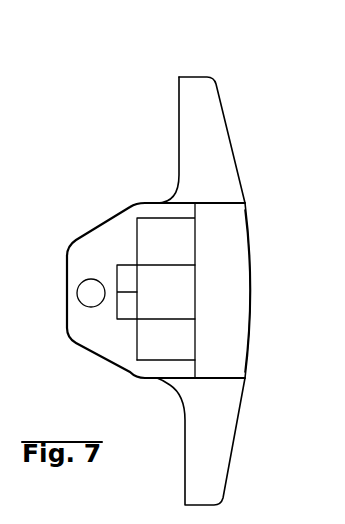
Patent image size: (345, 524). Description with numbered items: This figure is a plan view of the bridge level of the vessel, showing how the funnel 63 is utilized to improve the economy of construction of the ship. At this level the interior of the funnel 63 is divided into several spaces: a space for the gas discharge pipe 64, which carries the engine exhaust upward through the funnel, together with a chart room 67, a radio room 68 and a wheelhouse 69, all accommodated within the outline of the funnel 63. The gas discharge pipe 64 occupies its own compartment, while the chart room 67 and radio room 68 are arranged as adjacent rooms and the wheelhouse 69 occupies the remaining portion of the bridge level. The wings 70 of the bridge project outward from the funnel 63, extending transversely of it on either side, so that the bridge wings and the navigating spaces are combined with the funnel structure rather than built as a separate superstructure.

The funnel 63 is at (103, 215).
The gas discharge pipe 64 is at (72, 288).
The chart room 67 is at (157, 237).
The radio room 68 is at (155, 352).
The wheelhouse 69 is at (232, 347).
The wings of the bridge 70 is at (218, 128).